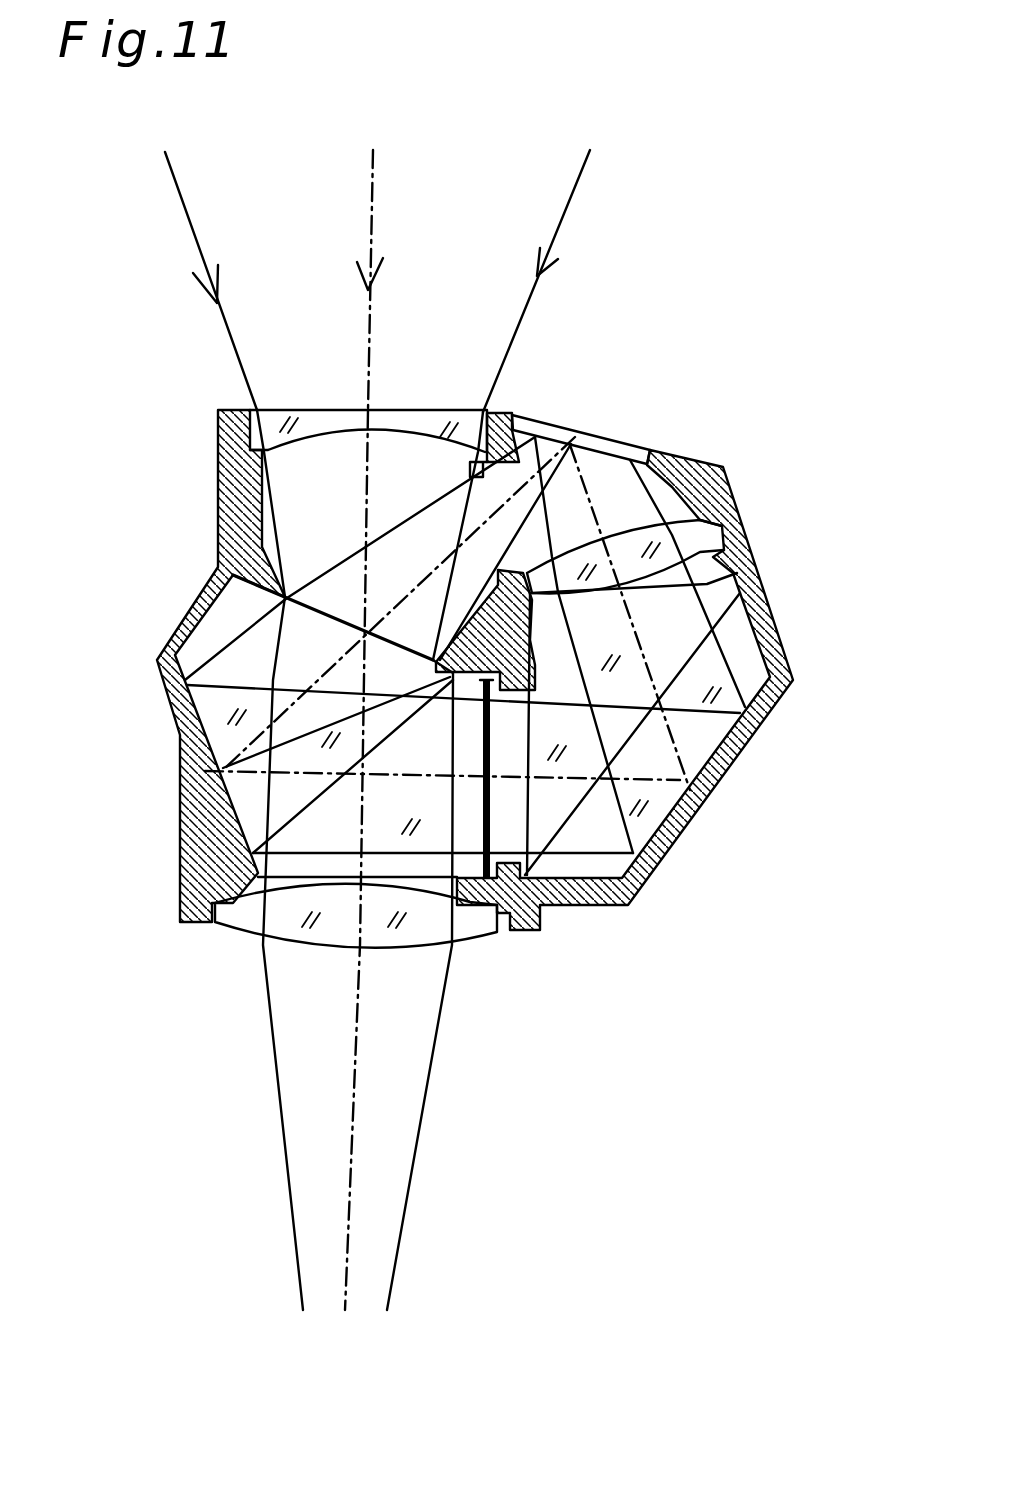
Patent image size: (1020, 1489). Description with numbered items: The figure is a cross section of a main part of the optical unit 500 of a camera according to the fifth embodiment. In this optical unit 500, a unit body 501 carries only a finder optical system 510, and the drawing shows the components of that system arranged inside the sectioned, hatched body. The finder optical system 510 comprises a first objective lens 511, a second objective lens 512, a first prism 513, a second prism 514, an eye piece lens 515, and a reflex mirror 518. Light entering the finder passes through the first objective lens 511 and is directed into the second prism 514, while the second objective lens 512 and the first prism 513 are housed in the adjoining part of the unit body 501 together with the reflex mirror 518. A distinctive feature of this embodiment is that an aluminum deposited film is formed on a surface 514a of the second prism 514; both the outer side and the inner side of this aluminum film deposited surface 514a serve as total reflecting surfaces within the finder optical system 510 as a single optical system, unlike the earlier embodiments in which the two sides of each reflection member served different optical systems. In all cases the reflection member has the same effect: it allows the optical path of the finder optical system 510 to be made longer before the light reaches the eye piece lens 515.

The optical unit 500 is at (687, 965).
The unit body 501 is at (710, 797).
The finder optical system 510 is at (427, 320).
The first objective lens 511 is at (422, 414).
The second objective lens 512 is at (695, 531).
The first prism 513 is at (740, 630).
The second prism 514 is at (394, 668).
The aluminum film deposited surface 514a is at (328, 613).
The eye piece lens 515 is at (467, 920).
The reflex mirror 518 is at (627, 447).